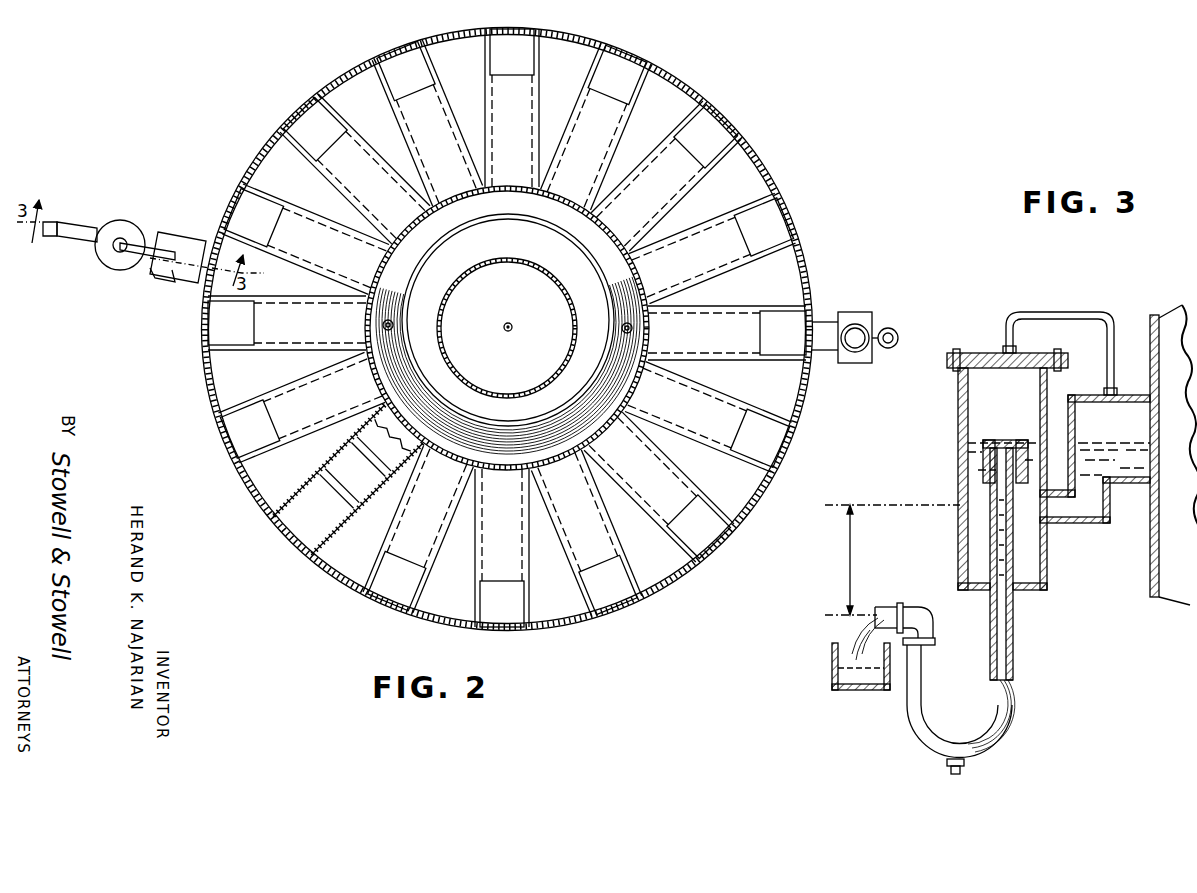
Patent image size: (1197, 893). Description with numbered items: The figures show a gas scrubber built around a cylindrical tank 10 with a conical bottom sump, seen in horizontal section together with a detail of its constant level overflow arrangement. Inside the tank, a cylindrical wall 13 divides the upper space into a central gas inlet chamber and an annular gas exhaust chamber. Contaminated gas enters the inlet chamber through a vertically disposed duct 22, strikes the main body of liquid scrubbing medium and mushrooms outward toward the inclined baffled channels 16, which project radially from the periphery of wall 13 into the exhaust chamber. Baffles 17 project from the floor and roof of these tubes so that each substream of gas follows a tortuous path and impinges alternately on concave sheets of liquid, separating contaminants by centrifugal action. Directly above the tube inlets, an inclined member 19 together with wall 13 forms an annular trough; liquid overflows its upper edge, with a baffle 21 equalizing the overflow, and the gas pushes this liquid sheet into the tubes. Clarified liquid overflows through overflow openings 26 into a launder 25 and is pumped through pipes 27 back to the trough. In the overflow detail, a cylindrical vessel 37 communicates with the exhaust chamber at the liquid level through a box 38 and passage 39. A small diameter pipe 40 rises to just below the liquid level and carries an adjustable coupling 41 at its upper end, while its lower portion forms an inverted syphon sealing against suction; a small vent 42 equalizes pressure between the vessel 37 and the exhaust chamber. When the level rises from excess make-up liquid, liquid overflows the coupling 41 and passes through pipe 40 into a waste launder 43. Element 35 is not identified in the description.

In FIG. 2, the cylindrical tank 10 is at (811, 379).
In FIG. 3, the cylindrical tank 10 is at (1150, 381).
In FIG. 2, the cylindrical wall 13 is at (374, 350).
In FIG. 2, the baffled channels 16 is at (461, 538).
In FIG. 2, the baffles 17 is at (342, 446).
In FIG. 2, the inclined member 19 is at (417, 356).
In FIG. 2, the baffle 21 is at (407, 319).
In FIG. 2, the duct 22 is at (447, 312).
In FIG. 2, the launder 25 is at (862, 313).
In FIG. 2, the overflow openings 26 is at (830, 321).
In FIG. 2, the pipes 27 is at (894, 348).
In FIG. 2, the housing block 35 is at (180, 232).
In FIG. 2, the cylindrical vessel 37 is at (126, 222).
In FIG. 3, the cylindrical vessel 37 is at (958, 402).
In FIG. 3, the box 38 is at (1090, 389).
In FIG. 3, the passage 39 is at (1067, 524).
In FIG. 3, the pipe 40 is at (1015, 613).
In FIG. 3, the adjustable coupling 41 is at (1026, 440).
In FIG. 2, the vent 42 is at (154, 268).
In FIG. 3, the vent 42 is at (1064, 312).
In FIG. 3, the waste launder 43 is at (832, 658).